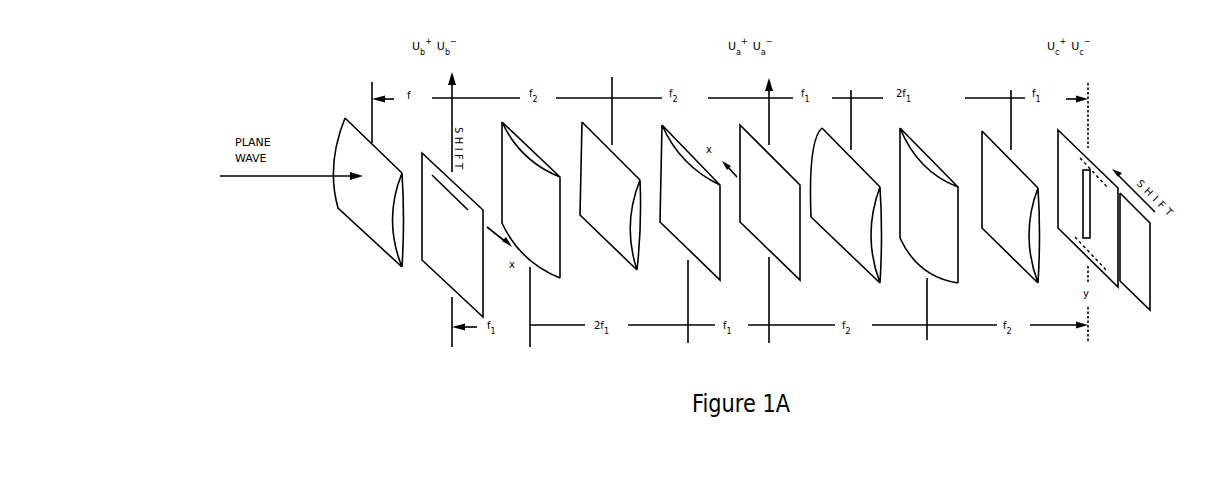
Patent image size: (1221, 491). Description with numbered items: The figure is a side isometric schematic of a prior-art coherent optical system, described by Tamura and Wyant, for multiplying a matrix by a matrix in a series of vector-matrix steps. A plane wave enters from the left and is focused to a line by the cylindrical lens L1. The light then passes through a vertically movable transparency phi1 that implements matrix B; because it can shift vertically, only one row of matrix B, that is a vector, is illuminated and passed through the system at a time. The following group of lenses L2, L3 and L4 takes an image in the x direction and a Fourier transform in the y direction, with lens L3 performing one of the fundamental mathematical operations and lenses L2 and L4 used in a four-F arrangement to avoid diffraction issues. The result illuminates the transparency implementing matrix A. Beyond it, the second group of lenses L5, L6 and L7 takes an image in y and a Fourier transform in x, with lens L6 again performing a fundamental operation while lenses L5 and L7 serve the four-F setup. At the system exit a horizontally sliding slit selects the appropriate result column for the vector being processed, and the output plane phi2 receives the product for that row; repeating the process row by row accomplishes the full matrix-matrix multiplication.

The cylindrical lens L1 is at (368, 192).
The phase mask phi1 is at (452, 235).
The lens L2 is at (535, 212).
The lens L3 is at (611, 211).
The lens L4 is at (695, 214).
The matrix A is at (770, 202).
The lens L5 is at (845, 219).
The lens L6 is at (933, 219).
The lens L7 is at (1012, 220).
The phase mask phi2 is at (1135, 251).